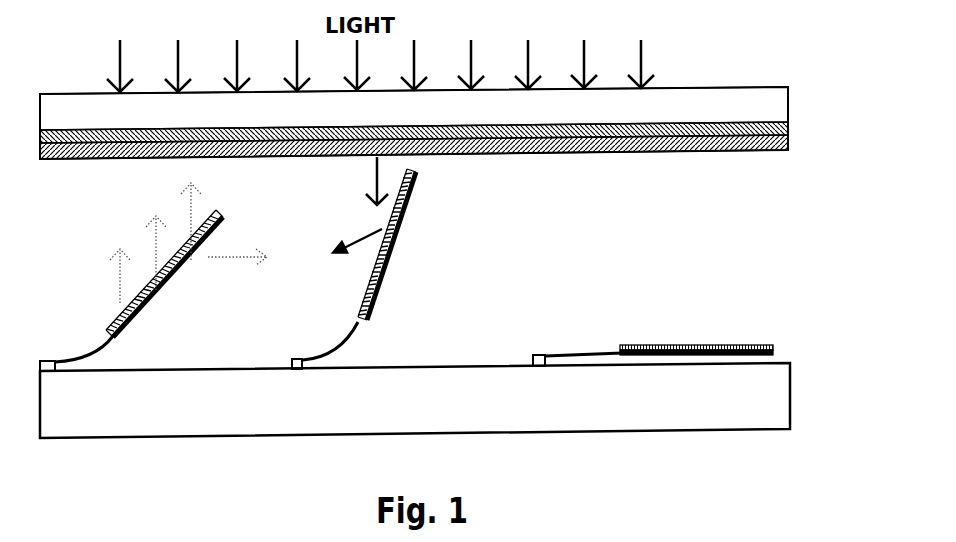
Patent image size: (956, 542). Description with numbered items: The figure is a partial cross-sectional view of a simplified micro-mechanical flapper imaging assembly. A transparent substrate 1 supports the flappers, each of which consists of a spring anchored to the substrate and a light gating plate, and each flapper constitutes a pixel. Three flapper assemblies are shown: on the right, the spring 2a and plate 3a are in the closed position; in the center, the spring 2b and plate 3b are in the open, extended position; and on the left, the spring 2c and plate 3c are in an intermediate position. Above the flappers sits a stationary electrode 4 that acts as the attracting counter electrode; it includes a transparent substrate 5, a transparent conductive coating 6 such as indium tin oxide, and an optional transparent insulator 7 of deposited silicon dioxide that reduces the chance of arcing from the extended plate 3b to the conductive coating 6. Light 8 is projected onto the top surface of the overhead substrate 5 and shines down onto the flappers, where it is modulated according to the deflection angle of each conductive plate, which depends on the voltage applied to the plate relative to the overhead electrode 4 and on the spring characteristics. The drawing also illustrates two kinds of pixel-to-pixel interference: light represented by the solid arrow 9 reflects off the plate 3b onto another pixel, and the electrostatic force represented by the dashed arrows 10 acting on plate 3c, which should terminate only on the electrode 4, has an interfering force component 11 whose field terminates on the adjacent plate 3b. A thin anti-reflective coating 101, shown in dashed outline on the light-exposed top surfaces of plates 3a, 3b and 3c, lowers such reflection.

The substrate 1 is at (502, 382).
The spring 2a is at (590, 352).
The spring 2b is at (338, 343).
The spring 2c is at (103, 348).
The light gating plate 3a is at (712, 345).
The light gating plate 3b is at (388, 245).
The light gating plate 3c is at (163, 288).
The stationary electrode 4 is at (449, 121).
The transparent substrate 5 is at (770, 103).
The transparent conductive coating 6 is at (713, 128).
The transparent insulator 7 is at (755, 144).
The light 8 is at (118, 68).
The reflected light 9 is at (372, 229).
The electrostatic force 10 is at (121, 282).
The interfering force component 11 is at (236, 257).
The anti-reflective coating 101 is at (118, 323).